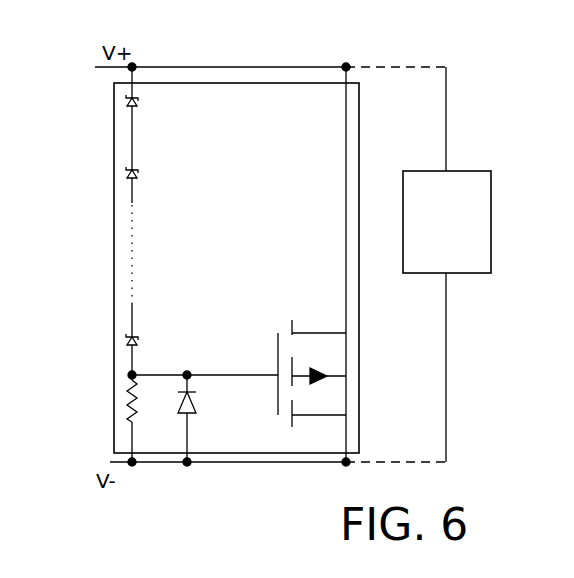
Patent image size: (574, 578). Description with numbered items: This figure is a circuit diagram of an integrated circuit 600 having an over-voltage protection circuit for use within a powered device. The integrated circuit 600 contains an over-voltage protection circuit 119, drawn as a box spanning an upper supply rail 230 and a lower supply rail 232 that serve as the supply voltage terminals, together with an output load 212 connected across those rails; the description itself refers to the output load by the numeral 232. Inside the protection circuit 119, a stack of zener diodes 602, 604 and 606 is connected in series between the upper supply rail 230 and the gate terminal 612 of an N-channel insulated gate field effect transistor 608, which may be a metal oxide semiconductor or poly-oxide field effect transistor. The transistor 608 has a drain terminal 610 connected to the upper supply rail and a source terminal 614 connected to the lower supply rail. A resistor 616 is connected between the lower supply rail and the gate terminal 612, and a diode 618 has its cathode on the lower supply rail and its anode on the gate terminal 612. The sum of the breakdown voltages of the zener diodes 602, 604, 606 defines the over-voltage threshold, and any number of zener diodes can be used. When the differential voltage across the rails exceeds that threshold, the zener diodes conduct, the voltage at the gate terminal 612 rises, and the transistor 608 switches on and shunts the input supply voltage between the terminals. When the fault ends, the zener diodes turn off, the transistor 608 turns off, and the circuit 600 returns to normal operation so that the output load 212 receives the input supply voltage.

The integrated circuit 600 is at (79, 158).
The over-voltage protection circuit 119 is at (298, 83).
The positive supply rail V+ 230 is at (267, 67).
The output load 232 is at (242, 462).
The load 212 is at (432, 171).
The zener diode 602 is at (138, 100).
The zener diode 604 is at (138, 170).
The zener diode 606 is at (128, 342).
The N-channel insulated gate field effect transistor 608 is at (368, 361).
The drain terminal 610 is at (325, 333).
The gate terminal 612 is at (232, 375).
The source 614 is at (305, 415).
The resistor 616 is at (128, 403).
The diode 618 is at (199, 406).